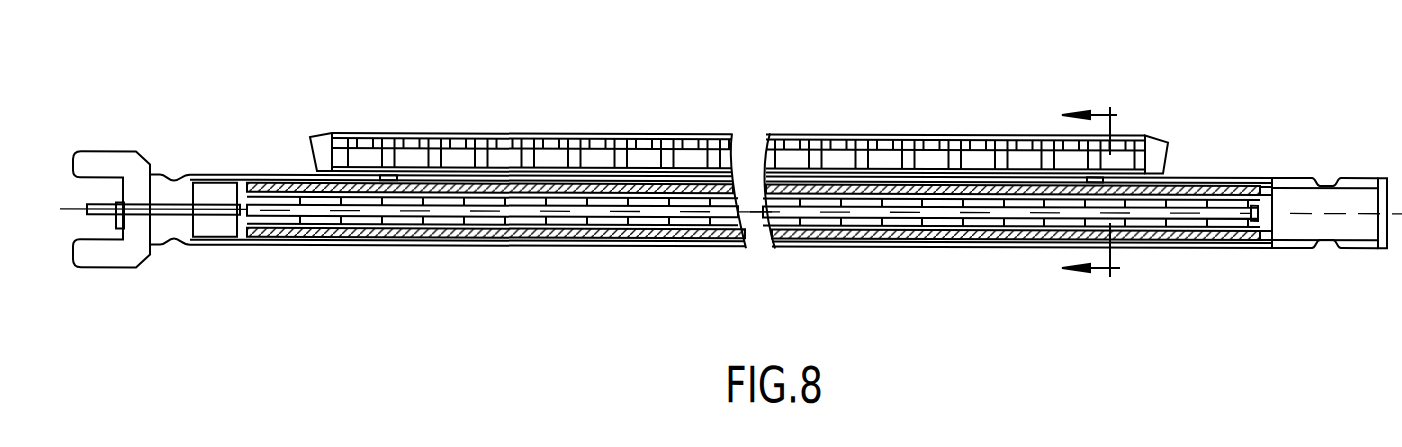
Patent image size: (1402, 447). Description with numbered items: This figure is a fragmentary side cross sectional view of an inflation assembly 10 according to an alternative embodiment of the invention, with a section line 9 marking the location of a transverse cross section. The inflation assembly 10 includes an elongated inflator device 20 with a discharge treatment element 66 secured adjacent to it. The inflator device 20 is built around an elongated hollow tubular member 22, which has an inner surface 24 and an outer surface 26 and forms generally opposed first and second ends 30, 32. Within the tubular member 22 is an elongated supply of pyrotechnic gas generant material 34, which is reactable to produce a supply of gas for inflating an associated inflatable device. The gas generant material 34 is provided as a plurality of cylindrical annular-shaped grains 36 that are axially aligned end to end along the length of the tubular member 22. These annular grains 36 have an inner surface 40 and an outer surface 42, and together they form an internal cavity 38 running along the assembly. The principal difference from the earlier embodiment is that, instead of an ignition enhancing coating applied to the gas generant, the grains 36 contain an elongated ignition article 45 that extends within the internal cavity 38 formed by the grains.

The inflation assembly 10 is at (1092, 67).
The inflator device 20 is at (298, 249).
The tubular member 22 is at (1027, 245).
The inner surface 24 is at (1293, 235).
The outer surface 26 is at (1271, 245).
The first end 30 is at (128, 285).
The second end 32 is at (1368, 267).
The gas generant material 34 is at (568, 221).
The grains 36 is at (652, 224).
The internal cavity 38 is at (709, 190).
The inner surface 40 is at (900, 214).
The outer surface 42 is at (840, 234).
The ignition article 45 is at (1256, 192).
The discharge treatment element 66 is at (670, 117).
The section line 9- 9 is at (1080, 193).